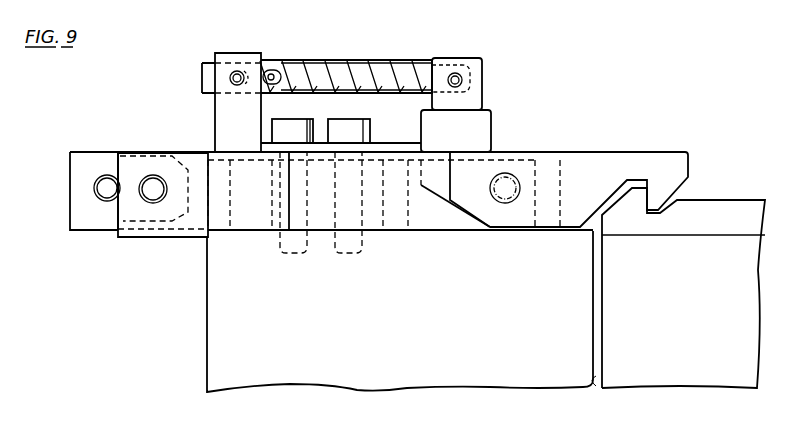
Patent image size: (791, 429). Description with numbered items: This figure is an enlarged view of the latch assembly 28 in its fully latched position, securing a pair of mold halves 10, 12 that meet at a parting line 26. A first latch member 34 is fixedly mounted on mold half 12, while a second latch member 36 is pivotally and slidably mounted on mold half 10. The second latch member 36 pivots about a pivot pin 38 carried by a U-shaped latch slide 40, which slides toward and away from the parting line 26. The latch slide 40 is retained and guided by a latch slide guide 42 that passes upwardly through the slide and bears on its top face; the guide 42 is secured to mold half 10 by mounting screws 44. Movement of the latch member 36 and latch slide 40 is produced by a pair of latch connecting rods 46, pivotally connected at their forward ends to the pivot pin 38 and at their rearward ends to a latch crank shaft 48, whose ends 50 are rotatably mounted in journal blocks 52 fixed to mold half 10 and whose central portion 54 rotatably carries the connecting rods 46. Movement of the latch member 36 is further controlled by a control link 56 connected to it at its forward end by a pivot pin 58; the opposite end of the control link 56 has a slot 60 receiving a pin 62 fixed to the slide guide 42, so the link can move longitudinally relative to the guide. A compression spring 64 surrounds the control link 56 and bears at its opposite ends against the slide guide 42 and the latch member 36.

The mold half 10 is at (394, 338).
The mold half 12 is at (671, 338).
The parting line 26 is at (591, 372).
The latch assembly 28 is at (492, 62).
The first latch member 34 is at (737, 210).
The second latch member 36 is at (637, 163).
The pivot pin 38 is at (505, 173).
The latch slide 40 is at (207, 212).
The latch slide guide 42 is at (218, 110).
The mounting screws 44 is at (358, 128).
The latch connecting rods 46 is at (442, 222).
The latch crank shaft 48 is at (70, 203).
The ends of crank shaft 50 is at (150, 176).
The journal blocks 52 is at (155, 238).
The central portion of crank shaft 54 is at (95, 188).
The control link 56 is at (384, 72).
The pivot pin 58 is at (455, 73).
The slot 60 is at (273, 70).
The pin 62 is at (237, 70).
The compression spring 64 is at (326, 64).